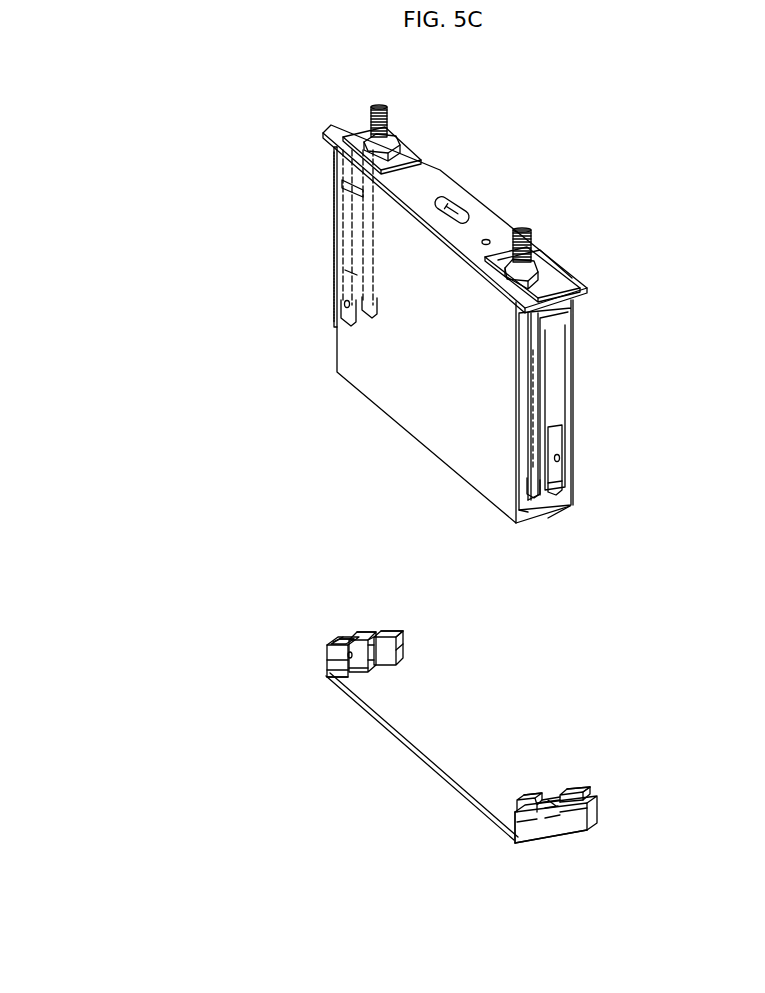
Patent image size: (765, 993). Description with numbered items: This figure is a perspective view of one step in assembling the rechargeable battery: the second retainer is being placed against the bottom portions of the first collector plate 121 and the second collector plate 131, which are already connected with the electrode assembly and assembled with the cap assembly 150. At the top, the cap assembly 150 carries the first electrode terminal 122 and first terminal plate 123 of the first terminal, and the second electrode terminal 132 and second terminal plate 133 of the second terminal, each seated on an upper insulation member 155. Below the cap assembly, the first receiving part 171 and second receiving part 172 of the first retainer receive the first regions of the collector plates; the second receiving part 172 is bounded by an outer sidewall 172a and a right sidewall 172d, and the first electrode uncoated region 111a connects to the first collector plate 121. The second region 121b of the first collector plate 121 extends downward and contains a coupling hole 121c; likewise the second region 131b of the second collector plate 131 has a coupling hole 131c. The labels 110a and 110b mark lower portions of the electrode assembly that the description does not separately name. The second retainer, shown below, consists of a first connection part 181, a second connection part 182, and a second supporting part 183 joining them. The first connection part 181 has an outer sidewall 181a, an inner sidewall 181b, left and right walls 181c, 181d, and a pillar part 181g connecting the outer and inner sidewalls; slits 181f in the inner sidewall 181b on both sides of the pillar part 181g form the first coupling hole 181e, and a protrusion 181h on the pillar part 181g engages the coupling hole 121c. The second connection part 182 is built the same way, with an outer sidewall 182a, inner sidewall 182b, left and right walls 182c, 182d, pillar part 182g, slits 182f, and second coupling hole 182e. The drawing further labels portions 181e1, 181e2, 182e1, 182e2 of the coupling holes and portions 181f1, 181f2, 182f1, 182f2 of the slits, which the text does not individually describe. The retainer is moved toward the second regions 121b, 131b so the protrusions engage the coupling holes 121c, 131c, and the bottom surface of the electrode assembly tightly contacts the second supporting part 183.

The first bottom surface of battery cell case 110a is at (533, 521).
The second bottom surface of battery cell case 110b is at (555, 516).
The first electrode uncoated region 111a is at (522, 484).
The first collector plate 121 is at (338, 237).
The second region 121b is at (348, 274).
The coupling hole 121c is at (345, 305).
The first electrode terminal 122 is at (376, 106).
The first terminal plate 123 is at (390, 134).
The second collector plate 131 is at (575, 424).
The second region 131b is at (561, 447).
The coupling hole 131c is at (562, 480).
The second electrode terminal 132 is at (522, 231).
The second terminal plate 133 is at (530, 268).
The cap assembly 150 is at (490, 186).
The upper insulation member 155 is at (352, 136).
The first receiving part 171 is at (330, 173).
The second receiving part 172 is at (566, 338).
The outer sidewall 172a is at (545, 350).
The right sidewall 172d is at (527, 334).
The first connection part 181 is at (320, 639).
The outer sidewall 181a is at (385, 632).
The inner sidewall 181b is at (396, 646).
The left wall 181c is at (329, 663).
The right wall 181d is at (394, 629).
The first coupling hole 181e is at (397, 580).
The first insertion slot of first connector 181e1 is at (340, 633).
The second insertion slot of first connector 181e2 is at (371, 615).
The slit 181f is at (372, 745).
The first lower portion of first connector 181f1 is at (327, 674).
The second lower portion of first connector 181f2 is at (363, 674).
The pillar part 181g is at (396, 663).
The protrusion 181h is at (346, 654).
The second connection part 182 is at (594, 832).
The outer sidewall 182a is at (583, 812).
The inner sidewall 182b is at (565, 798).
The left wall 182c is at (517, 817).
The right wall 182d is at (585, 796).
The second coupling hole 182e is at (622, 720).
The first insertion slot of second connector 182e1 is at (535, 794).
The second insertion slot of second connector 182e2 is at (562, 788).
The slit 182f is at (592, 895).
The first lower portion of second connector 182f1 is at (535, 821).
The second lower portion of second connector 182f2 is at (550, 808).
The pillar part 182g is at (566, 806).
The second supporting part 183 is at (463, 730).